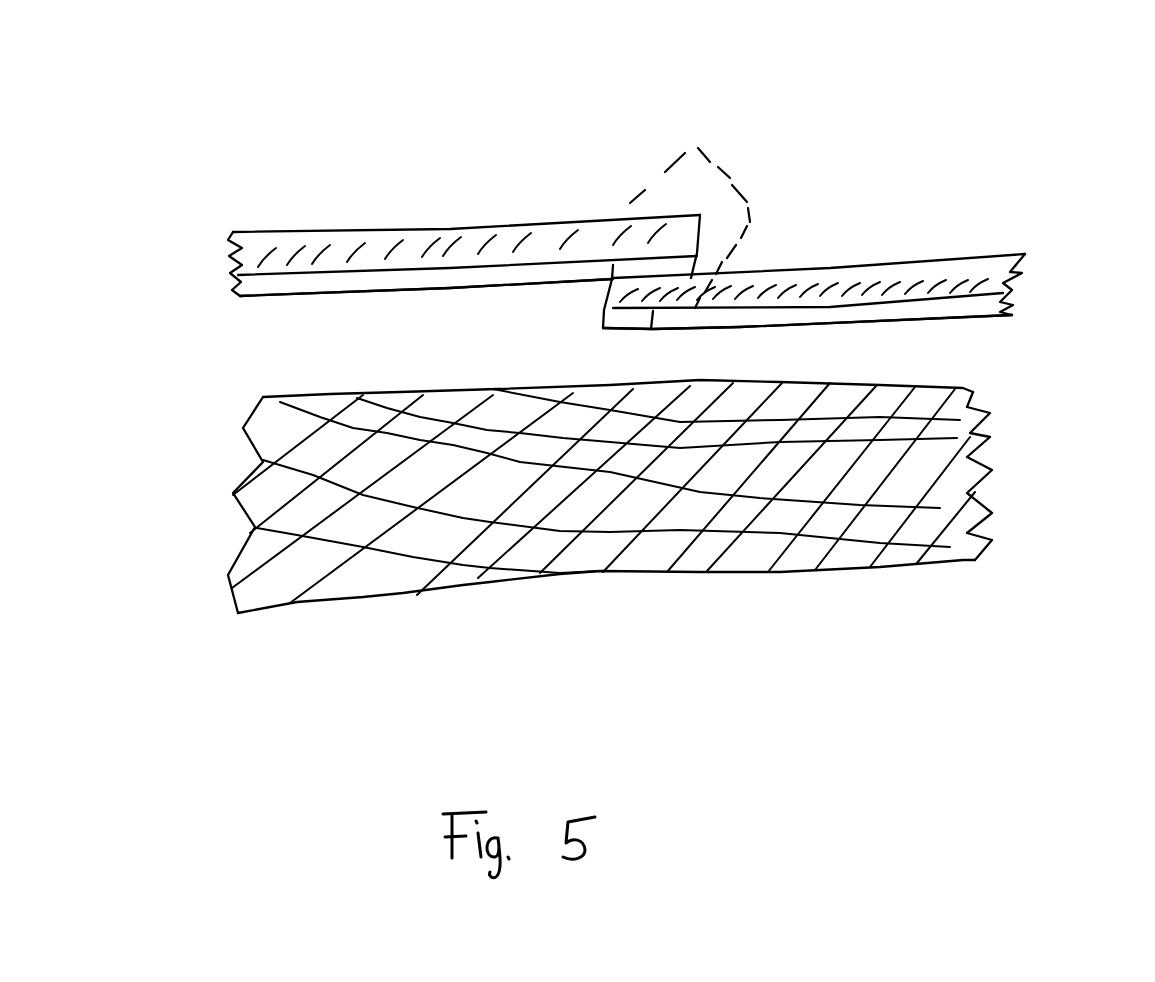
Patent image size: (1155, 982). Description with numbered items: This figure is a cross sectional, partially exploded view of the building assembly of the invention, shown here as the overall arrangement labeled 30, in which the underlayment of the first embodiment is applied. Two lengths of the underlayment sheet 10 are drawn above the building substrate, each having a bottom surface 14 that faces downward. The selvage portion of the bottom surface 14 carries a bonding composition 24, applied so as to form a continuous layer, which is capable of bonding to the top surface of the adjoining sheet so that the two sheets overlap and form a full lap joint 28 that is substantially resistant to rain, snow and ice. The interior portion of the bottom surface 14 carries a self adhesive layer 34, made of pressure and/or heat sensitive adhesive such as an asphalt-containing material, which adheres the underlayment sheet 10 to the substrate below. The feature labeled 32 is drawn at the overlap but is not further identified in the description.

The underlayment sheet 10 is at (1020, 243).
The bottom surface 14 is at (270, 247).
The bonding composition 24 is at (262, 188).
The full lap joint 28 is at (323, 390).
The strip assembly 30 is at (1005, 105).
The overlap region 32 is at (733, 180).
The self adhesive layer 34 is at (317, 297).